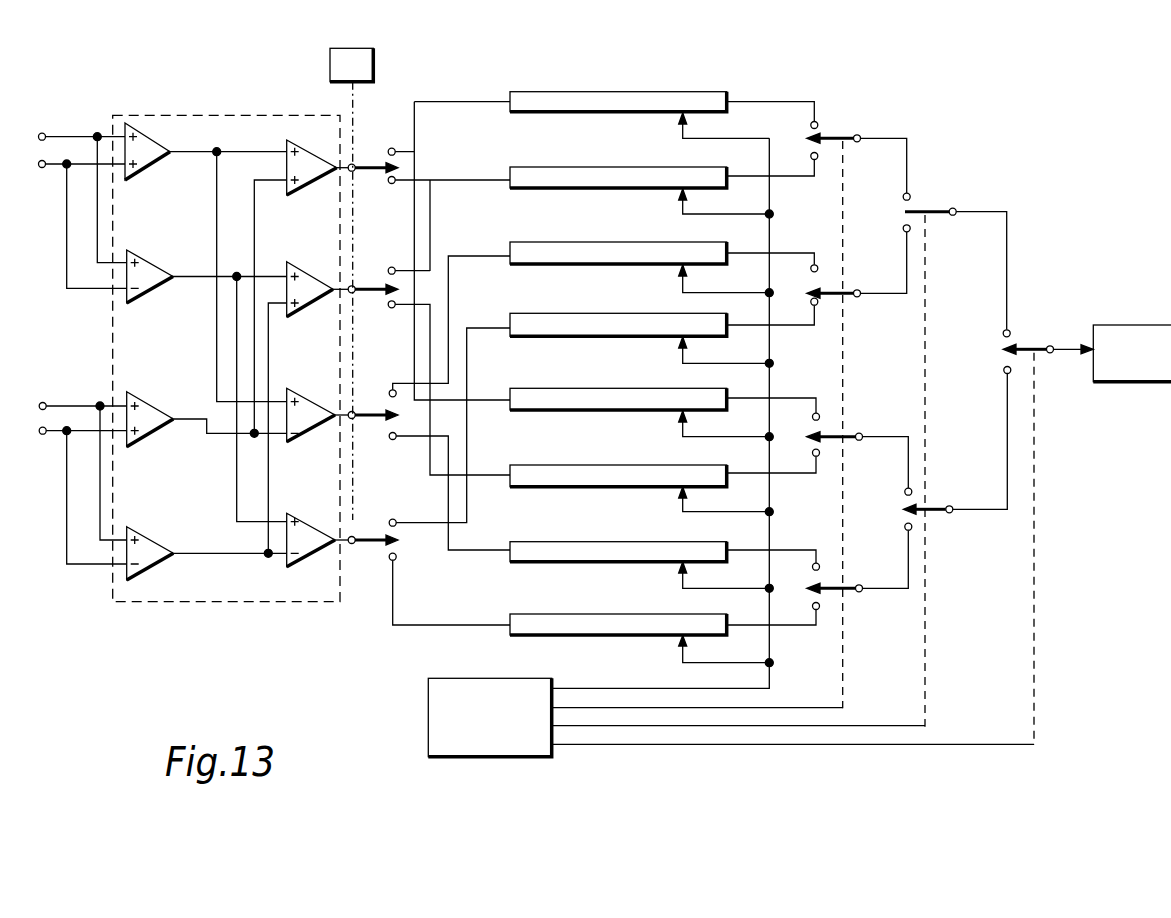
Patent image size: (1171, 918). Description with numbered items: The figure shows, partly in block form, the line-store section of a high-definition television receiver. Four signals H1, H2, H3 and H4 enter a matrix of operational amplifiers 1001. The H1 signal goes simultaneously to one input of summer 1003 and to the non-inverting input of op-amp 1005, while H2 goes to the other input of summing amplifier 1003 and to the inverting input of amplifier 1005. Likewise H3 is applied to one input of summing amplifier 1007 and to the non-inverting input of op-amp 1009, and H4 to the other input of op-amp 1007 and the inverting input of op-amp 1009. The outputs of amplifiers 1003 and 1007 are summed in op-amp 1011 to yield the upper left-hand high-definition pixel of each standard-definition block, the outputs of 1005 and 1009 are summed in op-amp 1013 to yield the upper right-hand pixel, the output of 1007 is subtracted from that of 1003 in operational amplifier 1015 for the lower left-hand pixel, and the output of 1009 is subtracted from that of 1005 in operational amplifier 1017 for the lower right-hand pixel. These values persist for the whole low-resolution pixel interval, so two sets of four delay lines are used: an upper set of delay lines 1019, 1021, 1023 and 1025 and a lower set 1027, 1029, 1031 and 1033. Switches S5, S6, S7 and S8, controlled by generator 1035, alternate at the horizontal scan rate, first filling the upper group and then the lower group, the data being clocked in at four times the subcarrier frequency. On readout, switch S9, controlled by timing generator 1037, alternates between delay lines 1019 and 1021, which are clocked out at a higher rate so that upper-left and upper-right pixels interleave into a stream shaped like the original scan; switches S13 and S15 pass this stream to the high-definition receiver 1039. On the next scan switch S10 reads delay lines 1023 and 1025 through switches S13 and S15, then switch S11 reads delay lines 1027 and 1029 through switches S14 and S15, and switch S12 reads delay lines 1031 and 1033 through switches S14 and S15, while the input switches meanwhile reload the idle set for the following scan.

The matrix of operational amplifiers 1001 is at (213, 603).
The summing amplifier 1003 is at (143, 172).
The op-amp 1005 is at (142, 292).
The summing amplifier 1007 is at (142, 450).
The op-amp 1009 is at (154, 516).
The op-amp 1011 is at (310, 188).
The op-amp 1013 is at (311, 302).
The operational amplifier 1015 is at (311, 436).
The operational amplifier 1017 is at (316, 553).
The delay line 1019 is at (579, 91).
The delay line 1021 is at (561, 166).
The delay line 1023 is at (560, 241).
The delay line 1025 is at (557, 313).
The delay line 1027 is at (605, 387).
The delay line 1029 is at (552, 465).
The delay line 1031 is at (562, 541).
The delay line 1033 is at (556, 614).
The generator 1035 is at (375, 82).
The timing generator 1037 is at (556, 677).
The high-definition receiver 1039 is at (1140, 384).
The H1 signal H1 is at (42, 132).
The H2 signal H2 is at (42, 168).
The H3 signal H3 is at (43, 402).
The H4 signal H4 is at (43, 434).
The switch S5 is at (376, 152).
The switch S6 is at (376, 274).
The switch S7 is at (376, 409).
The switch S8 is at (376, 525).
The switch S9 is at (834, 131).
The switch S10 is at (841, 281).
The switch S11 is at (840, 429).
The switch S12 is at (841, 580).
The switch S13 is at (929, 205).
The switch S14 is at (931, 500).
The switch S15 is at (1048, 342).